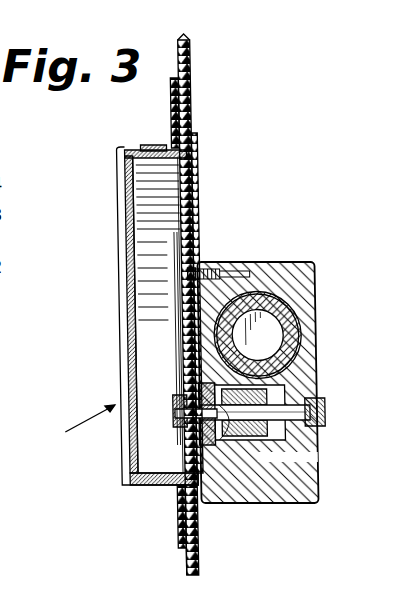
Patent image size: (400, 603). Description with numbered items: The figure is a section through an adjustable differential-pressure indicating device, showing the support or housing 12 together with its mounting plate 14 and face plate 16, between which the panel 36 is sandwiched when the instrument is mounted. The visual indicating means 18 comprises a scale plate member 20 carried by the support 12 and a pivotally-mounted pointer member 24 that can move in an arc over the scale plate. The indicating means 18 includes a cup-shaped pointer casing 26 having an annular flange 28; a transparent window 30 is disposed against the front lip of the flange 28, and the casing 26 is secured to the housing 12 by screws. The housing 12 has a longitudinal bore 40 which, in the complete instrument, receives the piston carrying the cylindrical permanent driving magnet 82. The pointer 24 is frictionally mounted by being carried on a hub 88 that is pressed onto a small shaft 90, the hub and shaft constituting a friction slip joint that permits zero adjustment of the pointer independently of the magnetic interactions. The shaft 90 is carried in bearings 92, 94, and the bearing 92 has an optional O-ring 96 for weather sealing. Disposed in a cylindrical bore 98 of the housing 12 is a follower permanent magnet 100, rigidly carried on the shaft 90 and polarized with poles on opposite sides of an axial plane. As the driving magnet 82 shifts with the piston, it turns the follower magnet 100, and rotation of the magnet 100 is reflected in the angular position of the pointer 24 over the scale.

The support or housing 12 is at (309, 478).
The mounting plate 14 is at (193, 155).
The face plate 16 is at (169, 105).
The visual indicating means 18 is at (72, 427).
The scale plate member 20 is at (171, 212).
The pointer member 24 is at (166, 338).
The cup-shaped pointer casing 26 is at (189, 178).
The annular flange 28 is at (139, 150).
The transparent window 30 is at (117, 322).
The panel 36 is at (188, 50).
The longitudinal bore 40 is at (280, 290).
The permanent driving magnet 82 is at (253, 302).
The hub 88 is at (168, 408).
The shaft 90 is at (193, 428).
The bearing 92 is at (230, 490).
The bearing 94 is at (318, 422).
The O-ring 96 is at (196, 510).
The cylindrical bore 98 is at (277, 488).
The follower permanent magnet 100 is at (304, 372).